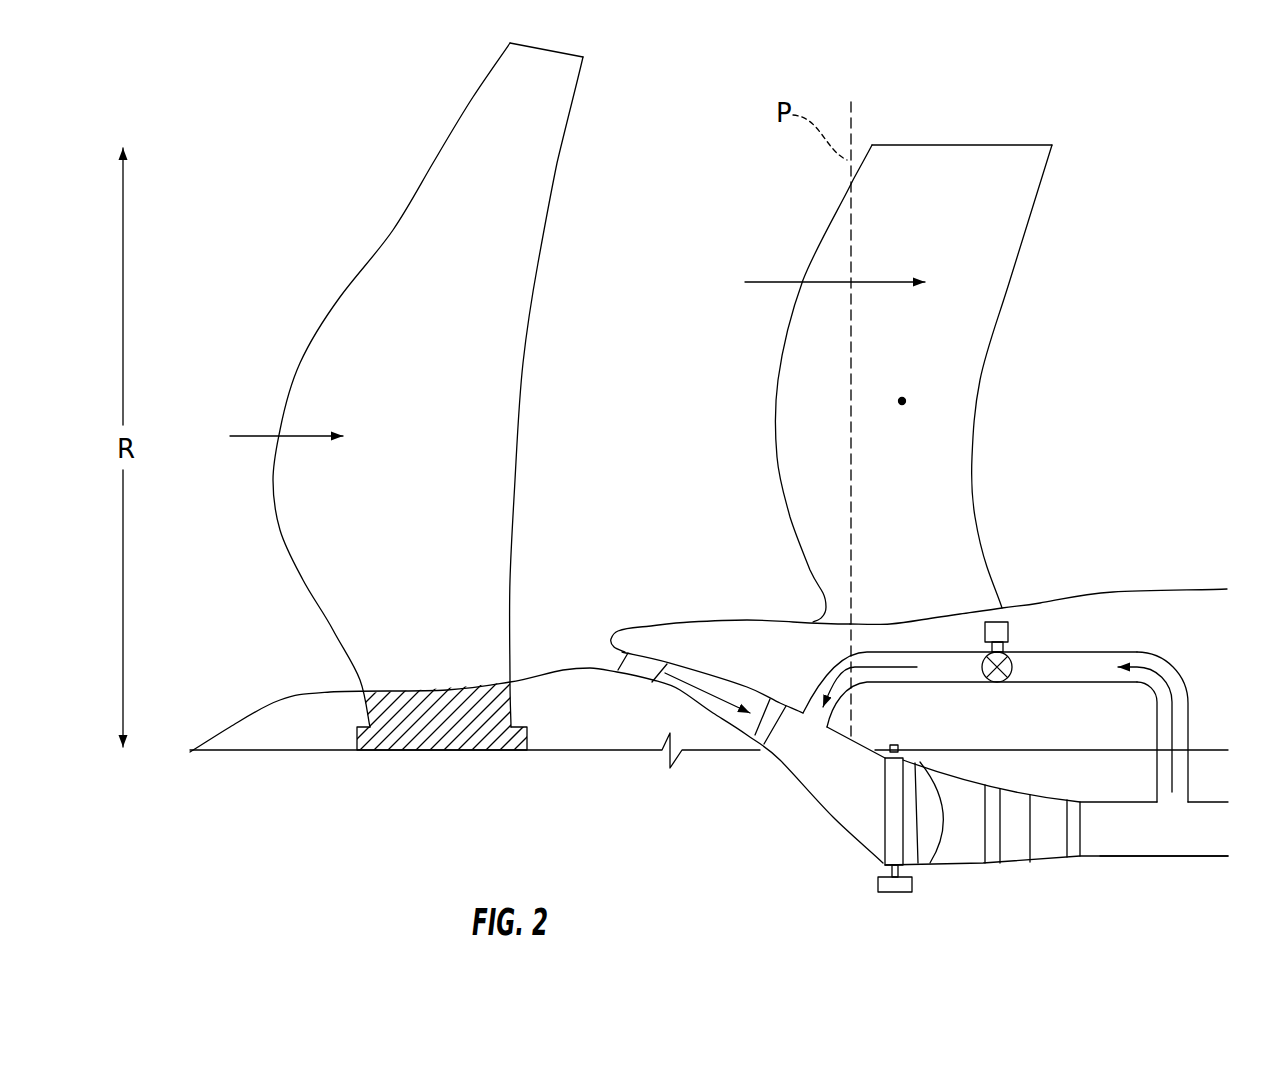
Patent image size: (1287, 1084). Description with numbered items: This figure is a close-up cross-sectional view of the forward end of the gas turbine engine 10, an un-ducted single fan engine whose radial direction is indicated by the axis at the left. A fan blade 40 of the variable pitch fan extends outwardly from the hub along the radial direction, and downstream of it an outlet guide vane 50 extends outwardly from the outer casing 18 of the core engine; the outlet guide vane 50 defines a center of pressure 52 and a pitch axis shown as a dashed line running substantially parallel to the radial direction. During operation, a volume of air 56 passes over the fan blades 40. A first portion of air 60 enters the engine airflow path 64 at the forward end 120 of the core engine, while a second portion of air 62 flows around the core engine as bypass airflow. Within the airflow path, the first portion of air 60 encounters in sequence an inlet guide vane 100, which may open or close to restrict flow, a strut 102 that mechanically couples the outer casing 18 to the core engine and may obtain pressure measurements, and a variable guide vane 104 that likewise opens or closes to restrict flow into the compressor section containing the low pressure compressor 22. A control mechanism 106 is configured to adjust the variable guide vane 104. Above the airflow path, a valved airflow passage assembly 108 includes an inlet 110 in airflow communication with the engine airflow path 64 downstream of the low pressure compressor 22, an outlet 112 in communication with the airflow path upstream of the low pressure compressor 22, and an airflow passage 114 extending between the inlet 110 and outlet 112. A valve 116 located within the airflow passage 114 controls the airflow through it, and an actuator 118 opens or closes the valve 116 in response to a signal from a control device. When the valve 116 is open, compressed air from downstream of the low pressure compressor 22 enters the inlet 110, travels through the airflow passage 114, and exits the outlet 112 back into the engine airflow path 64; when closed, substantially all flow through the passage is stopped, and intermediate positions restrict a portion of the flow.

The gas turbine engine 10 is at (207, 140).
The outer casing 18 is at (1128, 612).
The low pressure compressor 22 is at (1031, 878).
The fan blades 40 is at (398, 210).
The outlet guide vanes 50 is at (973, 162).
The center of pressure 52 is at (906, 401).
The volume of air 56 is at (253, 436).
The first portion of air 60 is at (687, 680).
The second portion of air 62 is at (783, 282).
The engine airflow path 64 is at (1200, 847).
The inlet guide vane 100 is at (632, 695).
The strut 102 is at (753, 747).
The variable guide vane 104 is at (922, 815).
The control mechanism 106 is at (895, 900).
The valved airflow passage assembly 108 is at (1052, 610).
The inlet 110 is at (1188, 802).
The outlet 112 is at (802, 708).
The airflow passage 114 is at (1175, 654).
The valve 116 is at (995, 685).
The actuator 118 is at (1005, 607).
The forward end 120 is at (607, 633).